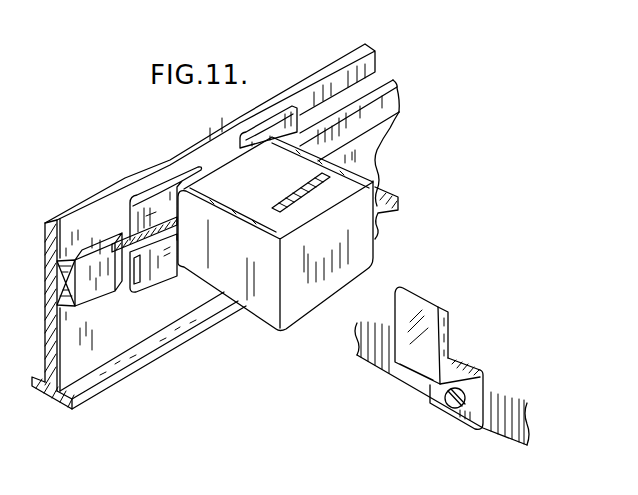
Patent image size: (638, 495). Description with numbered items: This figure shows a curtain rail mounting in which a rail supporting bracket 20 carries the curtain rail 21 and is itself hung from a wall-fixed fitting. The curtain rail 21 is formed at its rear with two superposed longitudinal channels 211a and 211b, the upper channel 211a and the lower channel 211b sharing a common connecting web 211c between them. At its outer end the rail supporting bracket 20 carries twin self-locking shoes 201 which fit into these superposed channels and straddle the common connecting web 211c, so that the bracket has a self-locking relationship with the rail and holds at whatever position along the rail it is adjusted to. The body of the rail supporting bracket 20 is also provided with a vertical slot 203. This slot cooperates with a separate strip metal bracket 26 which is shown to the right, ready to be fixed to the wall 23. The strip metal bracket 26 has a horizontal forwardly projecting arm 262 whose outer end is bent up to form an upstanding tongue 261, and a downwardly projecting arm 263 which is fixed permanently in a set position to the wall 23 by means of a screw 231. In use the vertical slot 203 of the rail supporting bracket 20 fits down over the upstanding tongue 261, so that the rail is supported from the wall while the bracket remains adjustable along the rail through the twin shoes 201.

The rail supporting bracket 20 is at (266, 177).
The curtain rail 21 is at (46, 343).
The longitudinal channel 211a is at (57, 304).
The longitudinal channel 211b is at (57, 304).
The common connecting web 211c is at (64, 281).
The self-locking shoe 201 is at (160, 178).
The vertical slot 203 is at (347, 163).
The wall 23 is at (510, 408).
The strip metal bracket 26 is at (428, 365).
The upstanding tongue 261 is at (428, 300).
The horizontal forwardly projecting arm 262 is at (453, 362).
The downwardly projecting arm 263 is at (471, 431).
The screw 231 is at (447, 408).